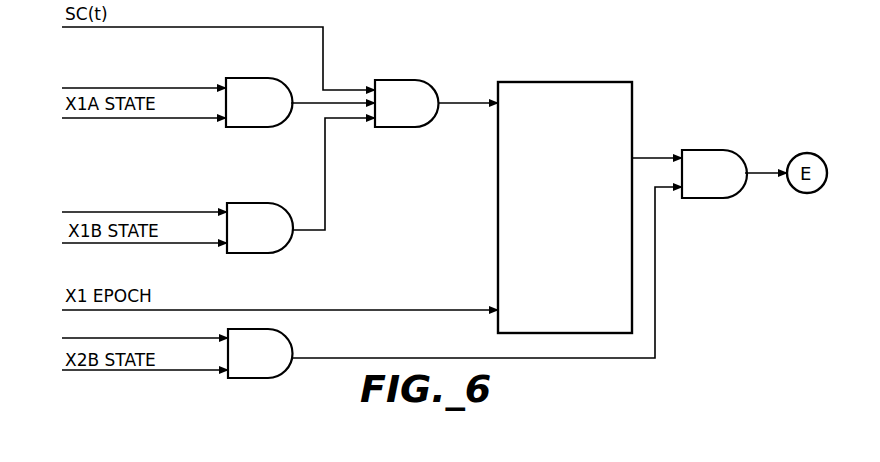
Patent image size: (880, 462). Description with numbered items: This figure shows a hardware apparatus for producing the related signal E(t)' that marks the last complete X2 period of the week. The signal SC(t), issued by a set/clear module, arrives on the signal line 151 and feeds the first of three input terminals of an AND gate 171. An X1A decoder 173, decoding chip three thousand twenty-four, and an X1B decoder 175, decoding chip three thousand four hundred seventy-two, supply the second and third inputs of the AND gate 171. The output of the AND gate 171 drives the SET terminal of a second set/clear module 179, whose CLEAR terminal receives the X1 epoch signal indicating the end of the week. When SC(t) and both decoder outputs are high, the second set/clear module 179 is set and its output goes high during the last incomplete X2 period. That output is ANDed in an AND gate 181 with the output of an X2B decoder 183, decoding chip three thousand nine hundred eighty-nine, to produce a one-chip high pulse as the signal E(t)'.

The signal line 151 is at (325, 52).
The AND gate 171 is at (400, 80).
The X1A decoder 173 is at (254, 78).
The X1B decoder 175 is at (253, 203).
The second set/clear module 179 is at (572, 82).
The AND gate 181 is at (708, 150).
The X2B decoder 183 is at (290, 336).